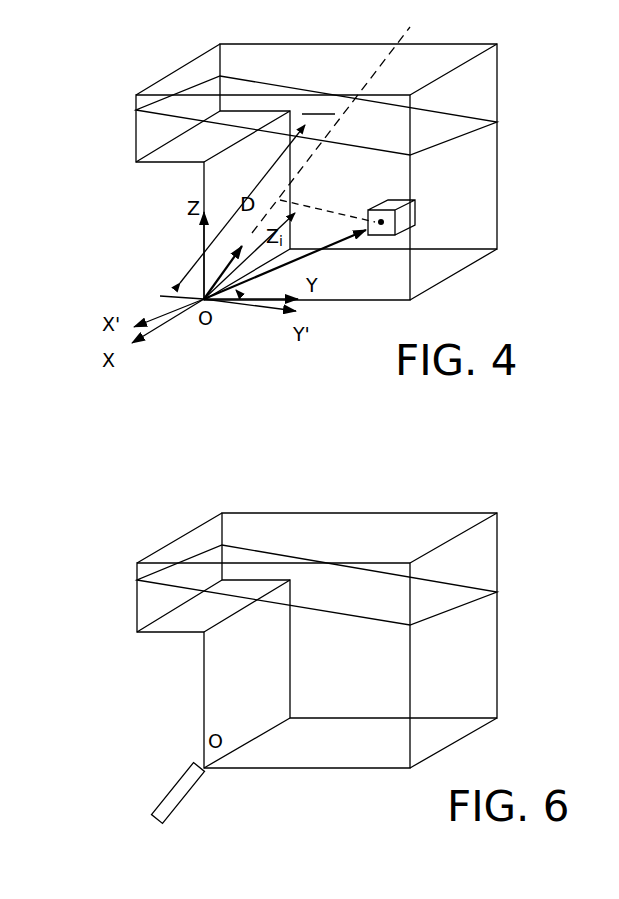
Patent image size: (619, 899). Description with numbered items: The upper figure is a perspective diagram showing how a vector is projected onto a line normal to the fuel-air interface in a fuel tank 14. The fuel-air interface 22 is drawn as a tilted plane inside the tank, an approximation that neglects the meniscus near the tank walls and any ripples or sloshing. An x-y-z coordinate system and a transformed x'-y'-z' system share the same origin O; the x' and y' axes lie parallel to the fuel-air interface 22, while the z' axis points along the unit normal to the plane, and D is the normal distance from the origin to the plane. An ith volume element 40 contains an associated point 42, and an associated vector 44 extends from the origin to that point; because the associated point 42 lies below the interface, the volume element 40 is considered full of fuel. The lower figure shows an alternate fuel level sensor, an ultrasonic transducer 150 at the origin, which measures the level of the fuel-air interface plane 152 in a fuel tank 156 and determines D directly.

In FIG. 4, the fuel tank 14 is at (178, 68).
In FIG. 4, the fuel-air interface 22 is at (453, 133).
In FIG. 4, the ith volume element 40 is at (417, 208).
In FIG. 4, the associated point 42 is at (384, 225).
In FIG. 4, the associated vector 44 is at (313, 253).
In FIG. 6, the fuel tank 156 is at (162, 530).
In FIG. 6, the fuel-air interface plane 152 is at (443, 598).
In FIG. 6, the ultrasonic transducer 150 is at (175, 803).